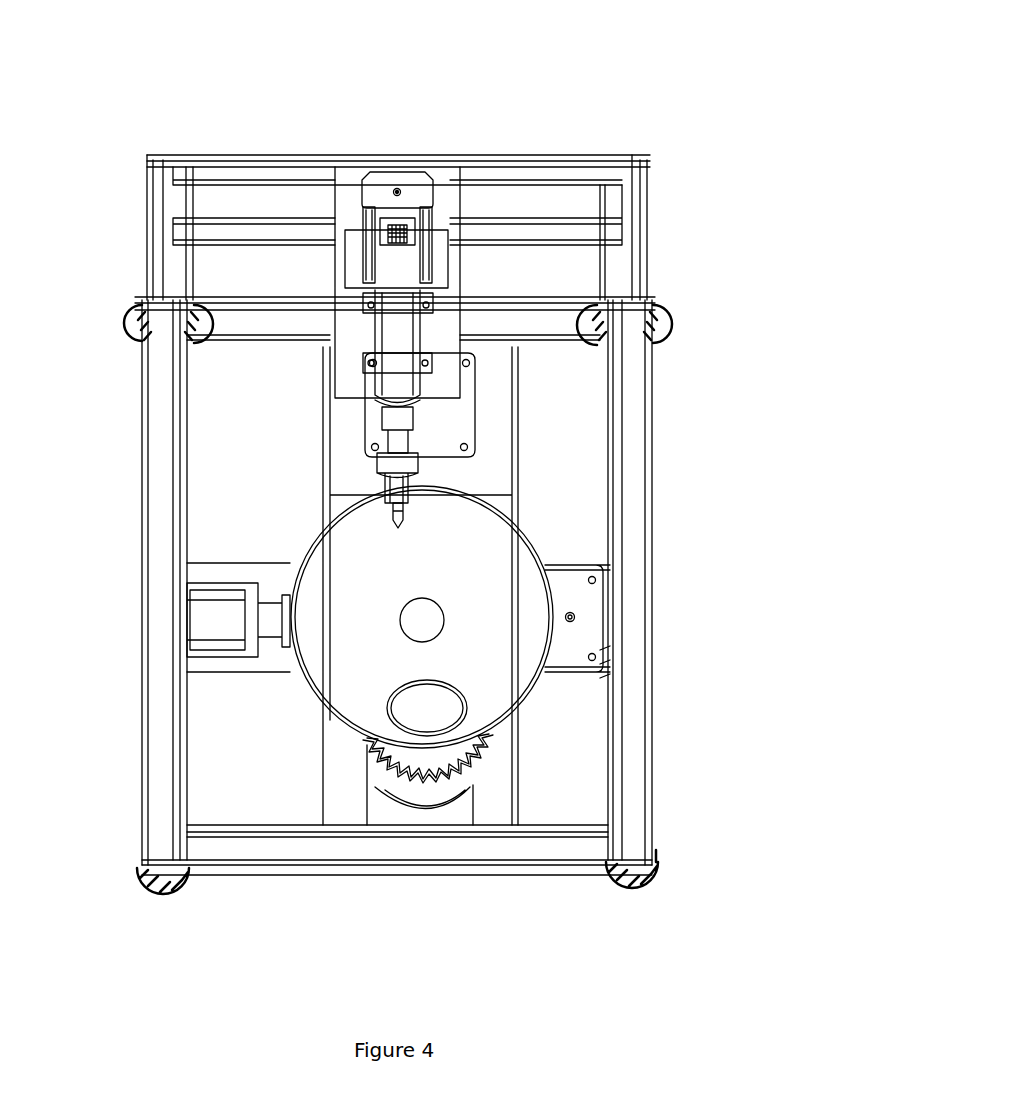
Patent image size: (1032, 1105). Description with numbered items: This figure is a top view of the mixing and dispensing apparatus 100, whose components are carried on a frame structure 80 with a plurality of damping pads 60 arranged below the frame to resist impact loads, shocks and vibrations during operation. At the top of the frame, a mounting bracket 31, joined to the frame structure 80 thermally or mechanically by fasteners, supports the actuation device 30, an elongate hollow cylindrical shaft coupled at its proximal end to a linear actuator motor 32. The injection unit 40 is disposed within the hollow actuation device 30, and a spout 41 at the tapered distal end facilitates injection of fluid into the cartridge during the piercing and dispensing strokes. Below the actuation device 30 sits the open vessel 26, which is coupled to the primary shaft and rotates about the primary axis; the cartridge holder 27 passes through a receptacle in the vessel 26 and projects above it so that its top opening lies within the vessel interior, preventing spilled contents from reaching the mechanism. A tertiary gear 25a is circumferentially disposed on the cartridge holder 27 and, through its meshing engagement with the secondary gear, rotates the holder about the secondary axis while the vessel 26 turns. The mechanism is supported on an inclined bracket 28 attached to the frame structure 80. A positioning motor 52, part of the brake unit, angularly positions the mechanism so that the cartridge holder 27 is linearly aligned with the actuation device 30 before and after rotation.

The mixing and dispensing apparatus 100 is at (572, 108).
The mounting bracket 31 is at (294, 152).
The linear actuator motor 32 is at (445, 190).
The actuation device 30 is at (428, 365).
The inclined bracket 28 is at (480, 417).
The injection unit 40 is at (415, 485).
The spout 41 is at (415, 518).
The open vessel 26 is at (566, 582).
The frame structure 80 is at (650, 659).
The positioning motor 52 is at (215, 575).
The damping pads 60 is at (152, 900).
The tertiary gear 25a is at (397, 790).
The cartridge holder 27 is at (443, 728).